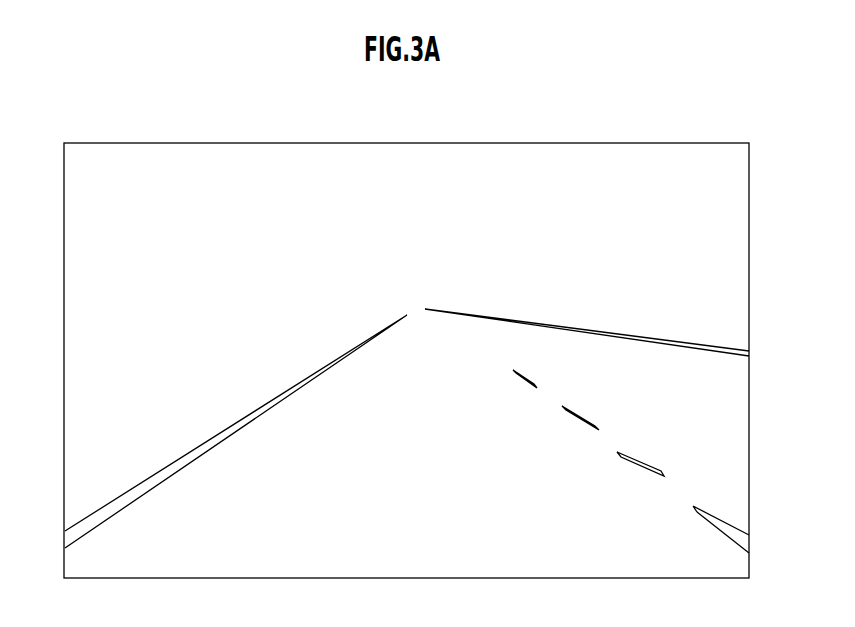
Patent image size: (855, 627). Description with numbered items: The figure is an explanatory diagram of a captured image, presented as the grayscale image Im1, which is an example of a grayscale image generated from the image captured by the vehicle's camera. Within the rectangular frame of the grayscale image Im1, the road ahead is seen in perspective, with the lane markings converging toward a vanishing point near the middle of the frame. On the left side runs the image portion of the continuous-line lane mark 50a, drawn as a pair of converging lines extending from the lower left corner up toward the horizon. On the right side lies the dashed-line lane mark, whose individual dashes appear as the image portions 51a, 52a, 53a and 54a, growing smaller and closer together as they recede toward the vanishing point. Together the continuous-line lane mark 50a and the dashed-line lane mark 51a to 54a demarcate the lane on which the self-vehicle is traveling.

The grayscale image Im1 is at (490, 141).
The continuous-line lane mark 50a is at (175, 470).
The dashed-line lane mark 51a is at (710, 522).
The dashed-line lane mark 52a is at (633, 461).
The dashed-line lane mark 53a is at (577, 413).
The dashed-line lane mark 54a is at (526, 371).